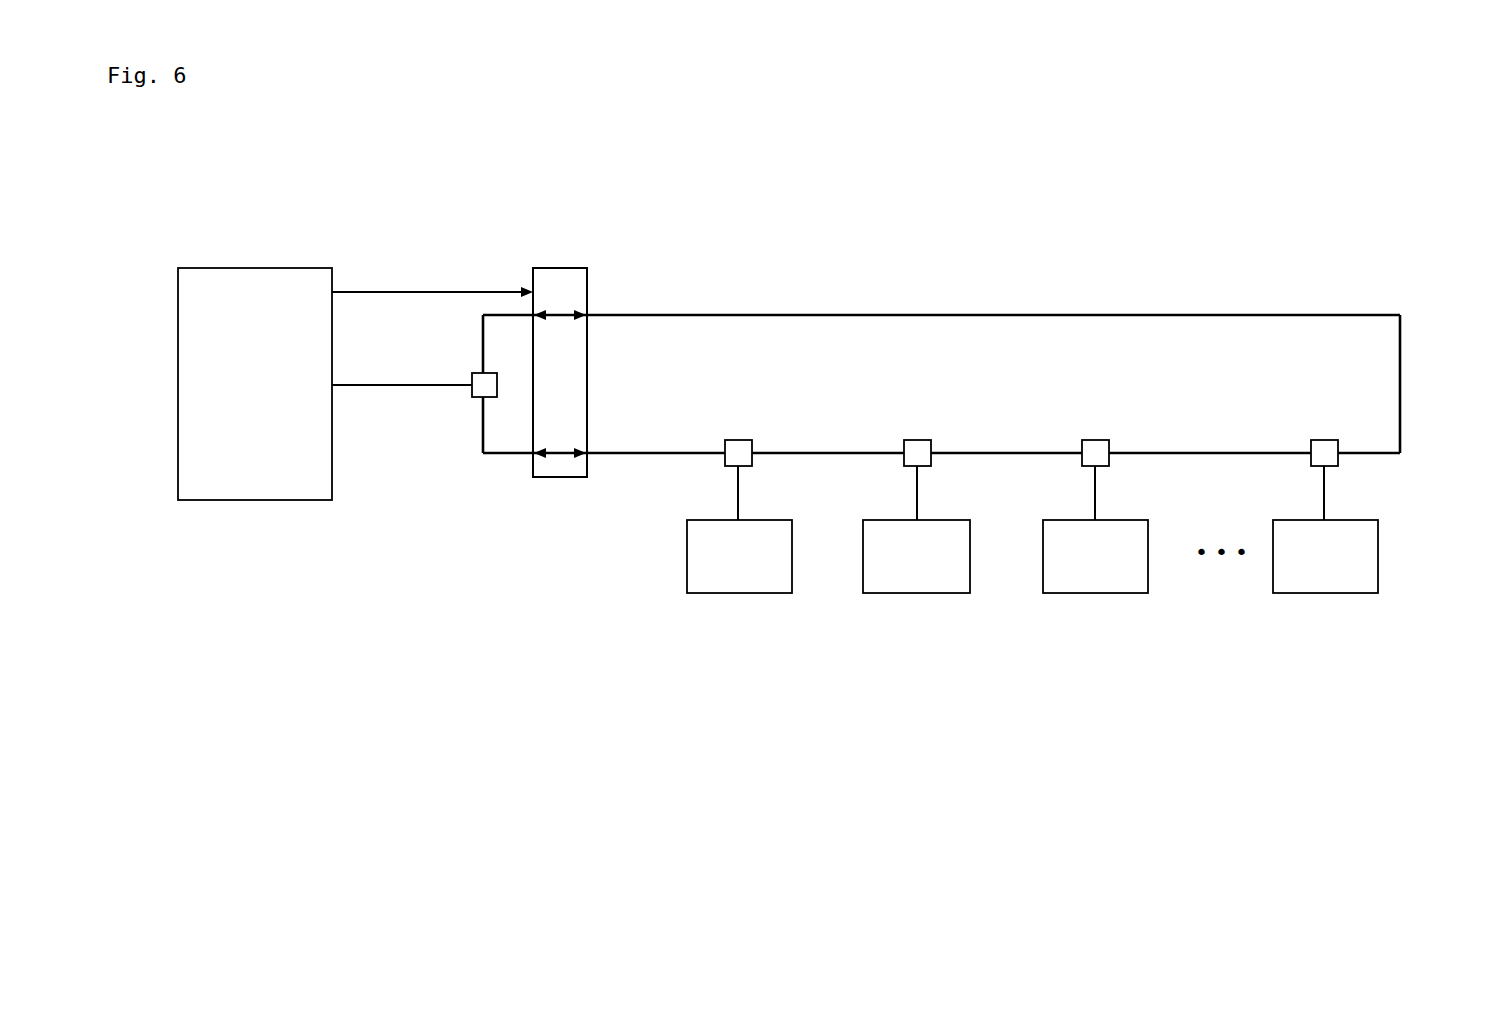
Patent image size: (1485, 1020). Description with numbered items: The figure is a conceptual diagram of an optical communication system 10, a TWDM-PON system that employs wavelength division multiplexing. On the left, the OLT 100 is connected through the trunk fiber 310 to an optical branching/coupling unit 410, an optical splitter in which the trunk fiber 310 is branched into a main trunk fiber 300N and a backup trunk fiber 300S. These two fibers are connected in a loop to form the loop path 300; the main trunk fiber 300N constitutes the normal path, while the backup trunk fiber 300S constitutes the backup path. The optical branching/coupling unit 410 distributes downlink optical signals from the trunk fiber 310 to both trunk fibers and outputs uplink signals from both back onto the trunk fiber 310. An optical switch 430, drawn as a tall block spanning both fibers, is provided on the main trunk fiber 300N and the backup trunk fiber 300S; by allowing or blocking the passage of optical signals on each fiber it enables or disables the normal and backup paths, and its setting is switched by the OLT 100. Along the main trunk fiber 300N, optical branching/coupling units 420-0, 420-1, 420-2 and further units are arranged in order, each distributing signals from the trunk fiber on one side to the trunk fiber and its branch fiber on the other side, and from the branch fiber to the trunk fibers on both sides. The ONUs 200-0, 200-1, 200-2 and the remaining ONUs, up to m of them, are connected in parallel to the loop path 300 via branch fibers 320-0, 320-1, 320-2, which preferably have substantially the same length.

The OLT 100 is at (228, 268).
The optical communication system 10 is at (396, 606).
The trunk fiber 310 is at (409, 383).
The optical branching/coupling unit 410 is at (470, 397).
The optical switch 430 is at (557, 266).
The loop path 300 is at (995, 313).
The backup trunk fiber 300S is at (655, 313).
The main trunk fiber 300N is at (648, 455).
The optical branching/coupling unit 420-0 is at (736, 440).
The optical branching/coupling unit 420-1 is at (915, 440).
The optical branching/coupling unit 420-2 is at (1093, 440).
The branch fiber 320-0 is at (738, 487).
The branch fiber 320-1 is at (917, 487).
The branch fiber 320-2 is at (1095, 487).
The ONU 200-0 is at (740, 593).
The ONU 200-1 is at (919, 593).
The ONU 200-2 is at (1097, 593).